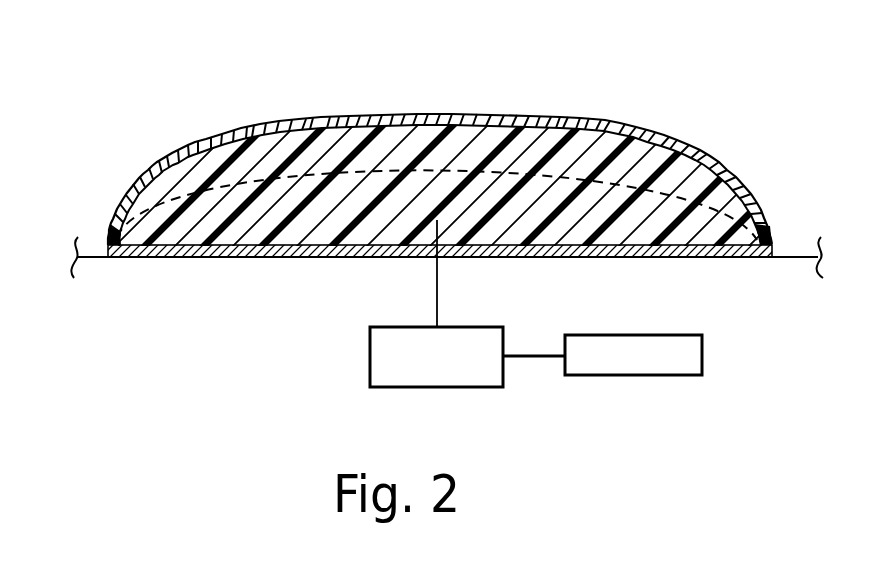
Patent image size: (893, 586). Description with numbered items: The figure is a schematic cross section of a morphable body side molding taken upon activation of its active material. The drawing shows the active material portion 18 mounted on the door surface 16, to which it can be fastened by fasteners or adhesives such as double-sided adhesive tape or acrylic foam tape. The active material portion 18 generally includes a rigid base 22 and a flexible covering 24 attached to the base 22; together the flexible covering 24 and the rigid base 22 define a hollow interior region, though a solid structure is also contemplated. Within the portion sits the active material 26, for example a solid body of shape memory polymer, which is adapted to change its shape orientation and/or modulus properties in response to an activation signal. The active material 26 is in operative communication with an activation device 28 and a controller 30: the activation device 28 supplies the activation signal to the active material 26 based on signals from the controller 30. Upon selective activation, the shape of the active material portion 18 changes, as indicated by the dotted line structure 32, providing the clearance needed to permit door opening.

The door surface 16 is at (792, 256).
The active material portion 18 is at (496, 164).
The rigid base 22 is at (296, 256).
The flexible covering 24 is at (209, 136).
The active material 26 is at (425, 197).
The activation device 28 is at (370, 356).
The controller 30 is at (702, 355).
The dotted line structure 32 is at (518, 170).